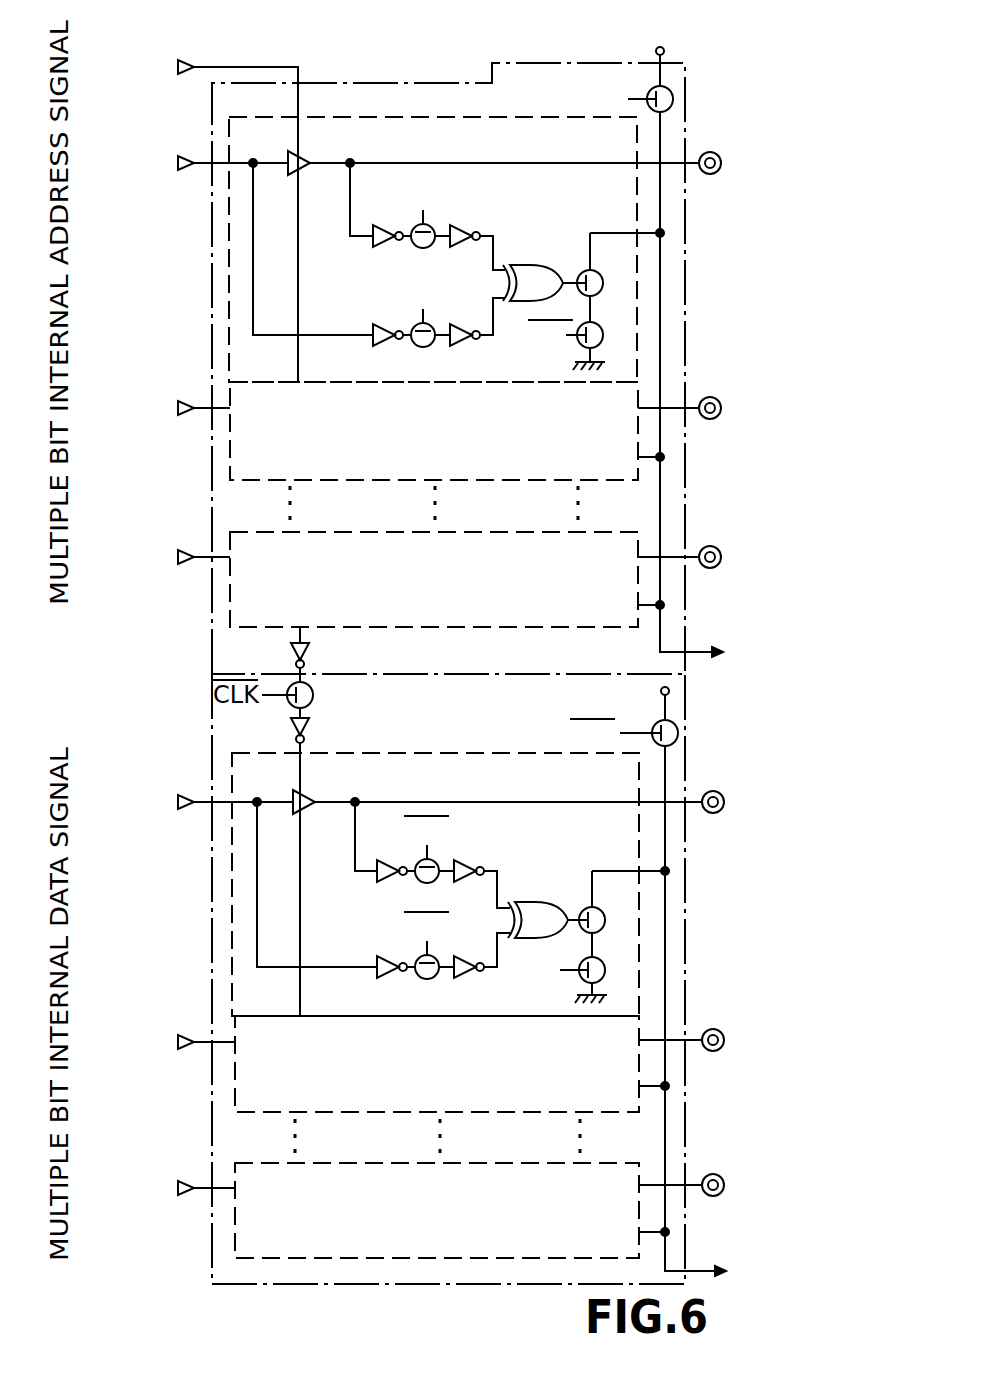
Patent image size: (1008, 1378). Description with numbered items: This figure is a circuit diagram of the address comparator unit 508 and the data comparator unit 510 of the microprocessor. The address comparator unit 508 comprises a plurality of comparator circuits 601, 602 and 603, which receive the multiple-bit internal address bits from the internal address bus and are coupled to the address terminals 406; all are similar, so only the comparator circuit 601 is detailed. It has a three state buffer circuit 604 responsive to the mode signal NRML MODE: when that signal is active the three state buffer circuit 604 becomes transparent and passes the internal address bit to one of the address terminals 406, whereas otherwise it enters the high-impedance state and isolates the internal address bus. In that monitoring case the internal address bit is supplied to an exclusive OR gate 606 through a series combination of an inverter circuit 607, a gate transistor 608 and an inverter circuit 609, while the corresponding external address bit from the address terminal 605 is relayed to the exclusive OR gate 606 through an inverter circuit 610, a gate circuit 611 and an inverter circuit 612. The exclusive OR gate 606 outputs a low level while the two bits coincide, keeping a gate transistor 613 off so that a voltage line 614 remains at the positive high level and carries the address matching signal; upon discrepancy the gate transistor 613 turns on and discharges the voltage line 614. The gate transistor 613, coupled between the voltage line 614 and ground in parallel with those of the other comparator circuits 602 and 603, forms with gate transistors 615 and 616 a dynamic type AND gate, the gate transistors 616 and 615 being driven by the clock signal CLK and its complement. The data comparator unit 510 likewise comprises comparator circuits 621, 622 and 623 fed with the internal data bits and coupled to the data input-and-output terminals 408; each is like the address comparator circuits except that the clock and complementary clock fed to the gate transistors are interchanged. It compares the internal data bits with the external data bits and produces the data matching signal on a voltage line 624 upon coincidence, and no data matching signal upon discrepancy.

The address terminals 406 is at (736, 138).
The data input-and-output terminals 408 is at (742, 766).
The address comparator unit 508 is at (532, 63).
The data comparator unit 510 is at (688, 913).
The comparator circuit 601 is at (470, 117).
The comparator circuit 602 is at (274, 380).
The comparator circuit 603 is at (588, 530).
The three state buffer circuit 604 is at (306, 152).
The address output terminal 605 is at (722, 163).
The exclusive OR gate 606 is at (526, 266).
The inverter circuit 607 is at (373, 330).
The gate transistor 608 is at (418, 348).
The inverter circuit 609 is at (463, 346).
The inverter circuit 610 is at (373, 242).
The gate circuit 611 is at (418, 248).
The inverter circuit 612 is at (463, 226).
The gate transistor 613 is at (603, 280).
The voltage line 614 is at (662, 292).
The gate transistor 615 is at (603, 332).
The gate transistor 616 is at (674, 99).
The comparator circuit 621 is at (422, 753).
The comparator circuit 622 is at (432, 1016).
The comparator circuit 623 is at (492, 1163).
The voltage line 624 is at (667, 963).